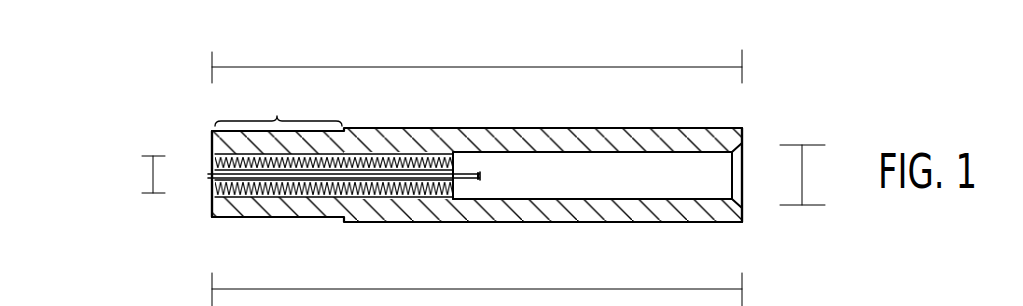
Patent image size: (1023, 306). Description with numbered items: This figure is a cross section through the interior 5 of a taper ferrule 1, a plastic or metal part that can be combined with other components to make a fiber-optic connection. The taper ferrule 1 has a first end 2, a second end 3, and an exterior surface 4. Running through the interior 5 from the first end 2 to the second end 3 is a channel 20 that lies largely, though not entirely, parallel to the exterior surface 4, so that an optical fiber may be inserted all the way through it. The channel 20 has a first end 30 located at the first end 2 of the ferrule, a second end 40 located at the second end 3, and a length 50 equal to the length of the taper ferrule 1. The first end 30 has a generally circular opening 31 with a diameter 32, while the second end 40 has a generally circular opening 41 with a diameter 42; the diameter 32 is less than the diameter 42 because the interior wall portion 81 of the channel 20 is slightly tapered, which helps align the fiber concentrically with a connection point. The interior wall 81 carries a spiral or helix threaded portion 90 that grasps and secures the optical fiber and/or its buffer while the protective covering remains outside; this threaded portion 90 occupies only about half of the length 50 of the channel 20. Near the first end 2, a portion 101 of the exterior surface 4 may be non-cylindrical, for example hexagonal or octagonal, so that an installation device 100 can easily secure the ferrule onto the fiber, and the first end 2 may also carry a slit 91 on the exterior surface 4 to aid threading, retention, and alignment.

The taper ferrule 1 is at (200, 123).
The first end 2 is at (212, 210).
The second end 3 is at (743, 143).
The exterior surface 4 is at (646, 222).
The interior 5 is at (718, 175).
The channel 20 is at (517, 188).
The first end of the channel 30 is at (212, 173).
The opening 31 is at (212, 187).
The diameter 32 is at (150, 173).
The second end of the channel 40 is at (743, 163).
The opening 41 is at (743, 208).
The diameter 42 is at (803, 173).
The length 50 is at (477, 67).
The interior wall portion 81 is at (553, 190).
The spiral or helix threaded portion 90 is at (283, 193).
The slit 91 is at (405, 180).
The installation device 100 is at (477, 290).
The portion of the exterior surface 101 is at (277, 108).